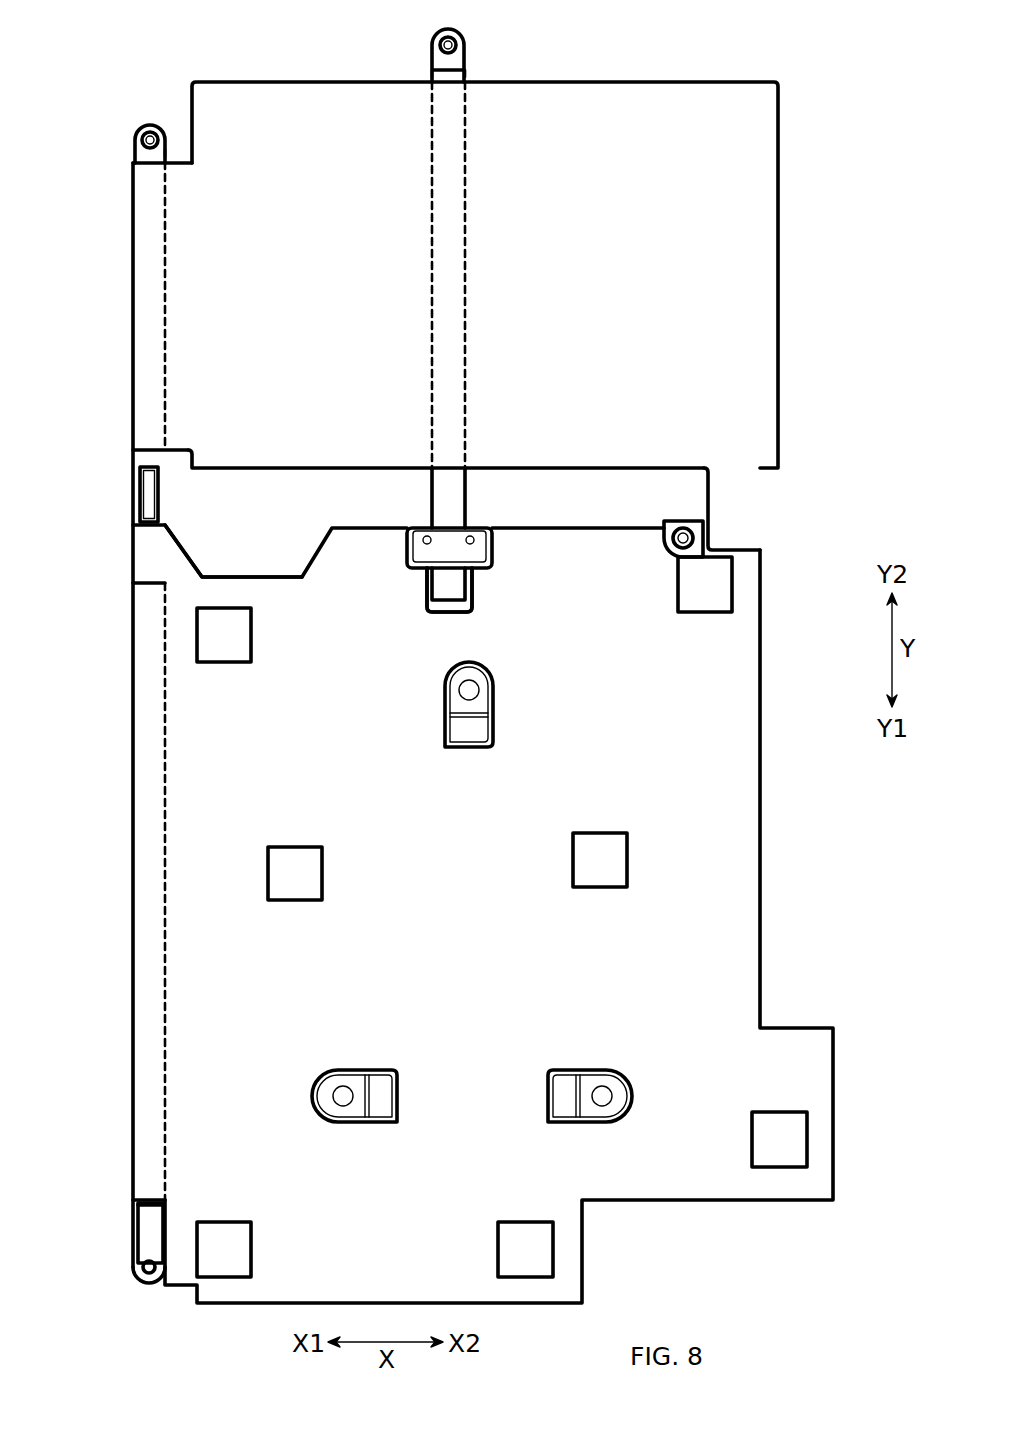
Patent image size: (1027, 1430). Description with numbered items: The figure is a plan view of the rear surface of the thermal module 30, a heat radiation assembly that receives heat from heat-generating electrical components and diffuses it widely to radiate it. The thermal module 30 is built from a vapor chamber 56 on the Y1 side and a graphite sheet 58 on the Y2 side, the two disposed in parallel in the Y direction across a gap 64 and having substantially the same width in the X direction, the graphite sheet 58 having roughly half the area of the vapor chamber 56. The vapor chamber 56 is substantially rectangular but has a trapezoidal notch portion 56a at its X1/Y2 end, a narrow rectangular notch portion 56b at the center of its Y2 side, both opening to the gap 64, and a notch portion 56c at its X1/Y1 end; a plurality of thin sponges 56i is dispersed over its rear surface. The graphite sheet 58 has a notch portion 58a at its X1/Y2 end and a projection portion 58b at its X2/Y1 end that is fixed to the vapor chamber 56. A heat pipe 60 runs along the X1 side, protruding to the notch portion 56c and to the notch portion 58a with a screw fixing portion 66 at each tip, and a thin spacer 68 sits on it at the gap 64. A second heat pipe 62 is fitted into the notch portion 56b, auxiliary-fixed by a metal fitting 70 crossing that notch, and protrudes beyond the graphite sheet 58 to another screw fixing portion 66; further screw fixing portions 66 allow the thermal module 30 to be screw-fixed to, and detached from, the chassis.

The thermal module 30 is at (812, 100).
The vapor chamber 56 is at (665, 745).
The notch portion 56a is at (267, 576).
The notch portion 56b is at (452, 600).
The notch portion 56c is at (150, 1228).
The thin sponges 56i is at (613, 858).
The graphite sheet 58 is at (566, 112).
The notch portion 58a is at (190, 122).
The projection portion 58b is at (740, 488).
The heat pipe 60 is at (145, 302).
The heat pipe 62 is at (440, 229).
The gap 64 is at (378, 492).
The screw fixing portion 66 is at (150, 128).
The thin spacer 68 is at (150, 491).
The metal fitting 70 is at (450, 545).